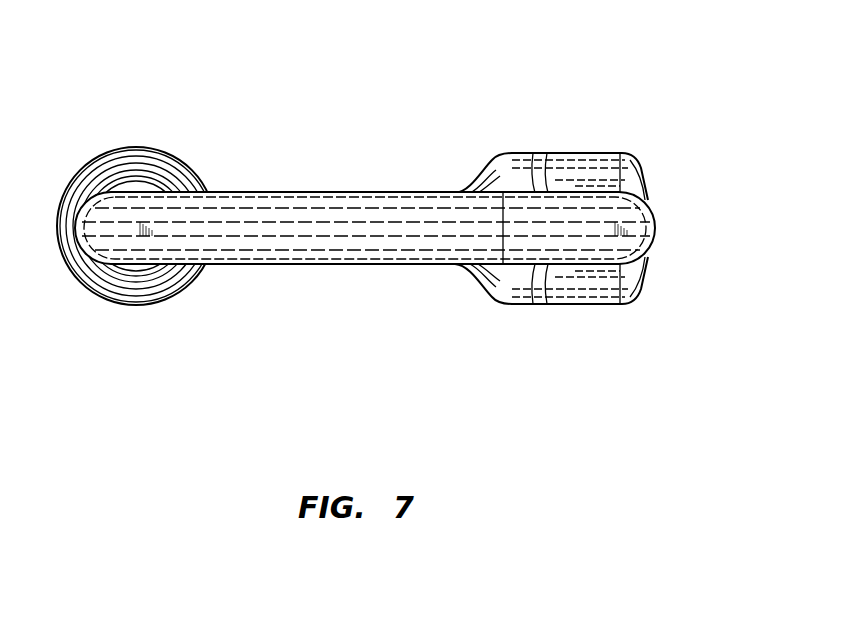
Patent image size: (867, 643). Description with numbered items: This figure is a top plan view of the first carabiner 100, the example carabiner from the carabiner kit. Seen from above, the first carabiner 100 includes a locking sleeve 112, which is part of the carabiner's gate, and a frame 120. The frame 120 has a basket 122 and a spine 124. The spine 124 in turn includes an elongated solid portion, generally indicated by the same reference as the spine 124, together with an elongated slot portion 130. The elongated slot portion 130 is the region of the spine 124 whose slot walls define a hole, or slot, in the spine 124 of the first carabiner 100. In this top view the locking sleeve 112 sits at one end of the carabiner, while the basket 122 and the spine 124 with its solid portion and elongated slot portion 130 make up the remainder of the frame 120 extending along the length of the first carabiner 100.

The first carabiner 100 is at (154, 82).
The locking sleeve 112 is at (192, 289).
The frame 120 is at (233, 220).
The basket 122 is at (475, 212).
The spine 124 is at (598, 186).
The elongated slot portion 130 is at (666, 192).